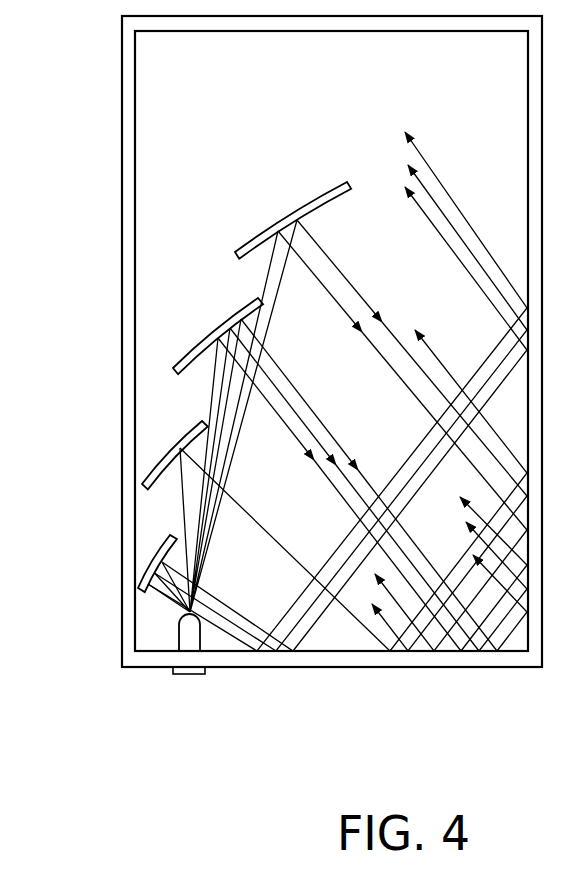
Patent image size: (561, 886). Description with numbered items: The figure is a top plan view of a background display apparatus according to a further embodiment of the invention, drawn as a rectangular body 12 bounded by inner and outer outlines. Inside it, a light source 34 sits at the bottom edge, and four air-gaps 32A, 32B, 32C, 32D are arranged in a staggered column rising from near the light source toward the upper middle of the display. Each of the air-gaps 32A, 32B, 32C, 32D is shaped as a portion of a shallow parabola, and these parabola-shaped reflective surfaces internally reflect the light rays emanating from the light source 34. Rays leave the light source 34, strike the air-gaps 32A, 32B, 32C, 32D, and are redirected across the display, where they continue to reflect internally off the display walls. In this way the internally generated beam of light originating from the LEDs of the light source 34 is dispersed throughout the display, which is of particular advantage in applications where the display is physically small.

The housing 12 is at (259, 99).
The air-gap 32A is at (150, 563).
The air-gap 32B is at (163, 452).
The air-gap 32C is at (203, 335).
The air-gap 32D is at (255, 228).
The light source 34 is at (190, 675).